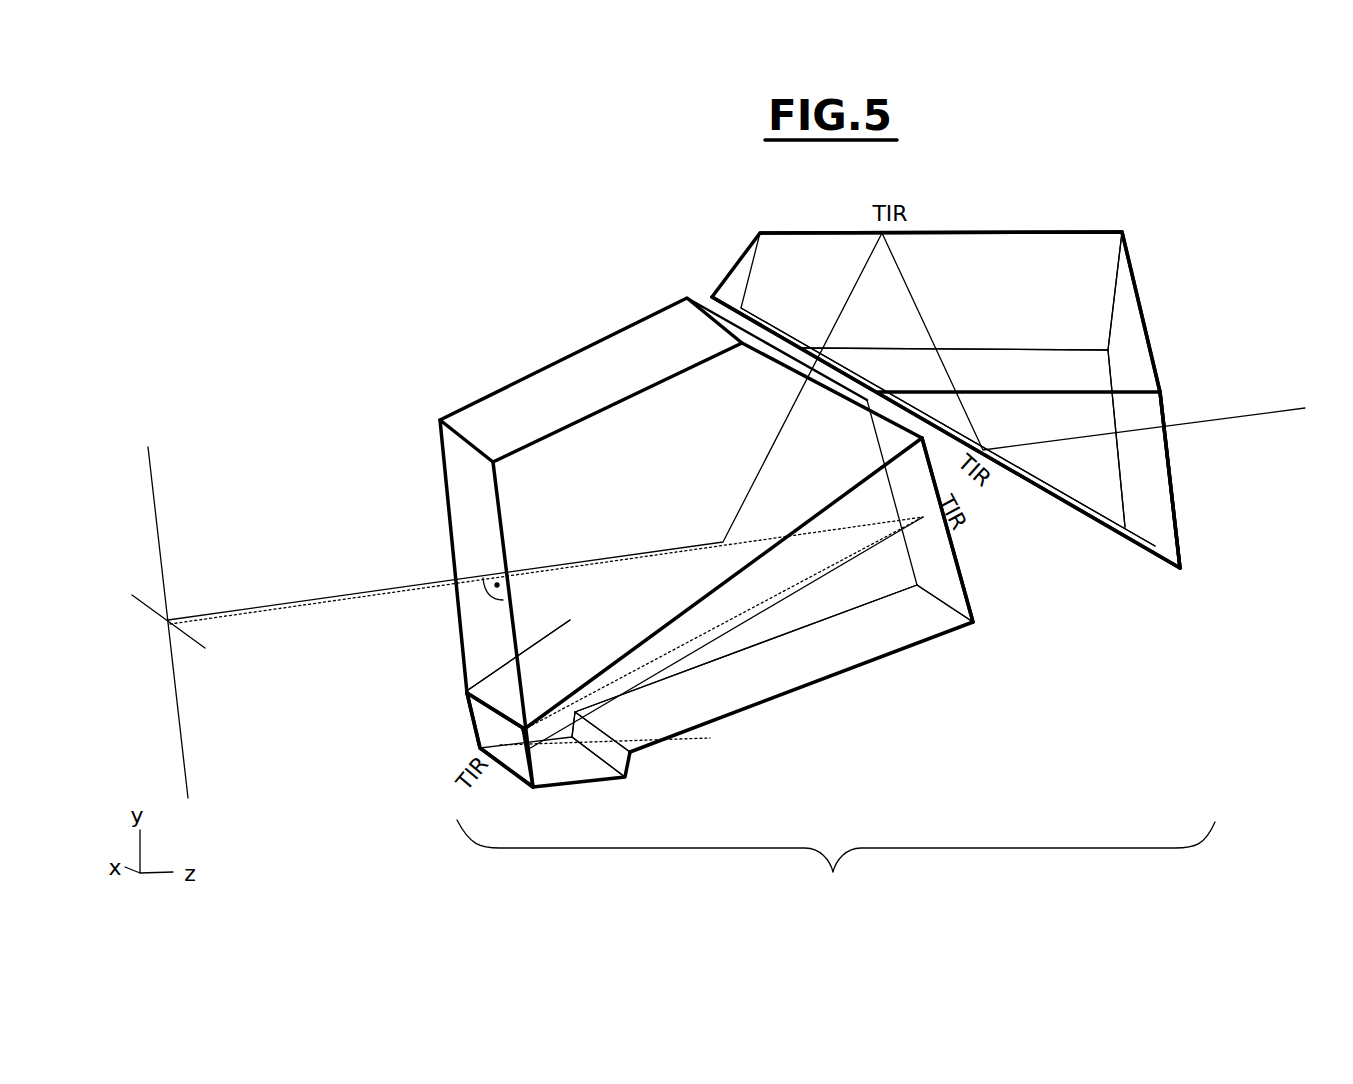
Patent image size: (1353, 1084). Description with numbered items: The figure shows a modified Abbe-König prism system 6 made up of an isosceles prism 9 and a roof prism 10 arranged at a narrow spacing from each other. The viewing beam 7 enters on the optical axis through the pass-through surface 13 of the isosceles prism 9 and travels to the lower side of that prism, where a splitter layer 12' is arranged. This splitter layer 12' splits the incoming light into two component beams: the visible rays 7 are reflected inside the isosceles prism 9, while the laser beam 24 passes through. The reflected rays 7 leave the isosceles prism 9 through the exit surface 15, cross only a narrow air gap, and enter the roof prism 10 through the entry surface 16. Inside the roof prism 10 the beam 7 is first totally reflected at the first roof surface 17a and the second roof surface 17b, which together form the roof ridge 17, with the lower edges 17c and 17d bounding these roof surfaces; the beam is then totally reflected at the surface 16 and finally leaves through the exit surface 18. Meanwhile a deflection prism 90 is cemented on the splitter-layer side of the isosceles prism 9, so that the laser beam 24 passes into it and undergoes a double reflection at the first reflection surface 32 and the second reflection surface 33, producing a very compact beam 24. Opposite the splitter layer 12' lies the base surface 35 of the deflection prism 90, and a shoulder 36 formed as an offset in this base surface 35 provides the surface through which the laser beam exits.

The Abbe-König prism system 6 is at (836, 864).
The viewing beam 7 is at (847, 300).
The isosceles prism 9 is at (436, 325).
The roof prism 10 is at (1092, 622).
The splitter layer 12' is at (456, 634).
The pass-through surface of the isosceles prism 13 is at (463, 480).
The exit surface 15 is at (703, 300).
The entry surface of the roof prism 16 is at (1032, 483).
The roof ridge 17 is at (1065, 232).
The first roof surface 17a is at (983, 262).
The second roof surface 17b is at (1143, 313).
The lower edge of the first roof surface 17c is at (1157, 365).
The lower edge of the second roof surface 17d is at (1090, 347).
The exit surface 18 is at (1162, 495).
The laser beam 24 is at (827, 570).
The first reflection surface 32 is at (952, 570).
The second reflection surface 33 is at (492, 727).
The base surface 35 is at (743, 677).
The shoulder 36 is at (633, 763).
The deflection prism 90 is at (890, 577).